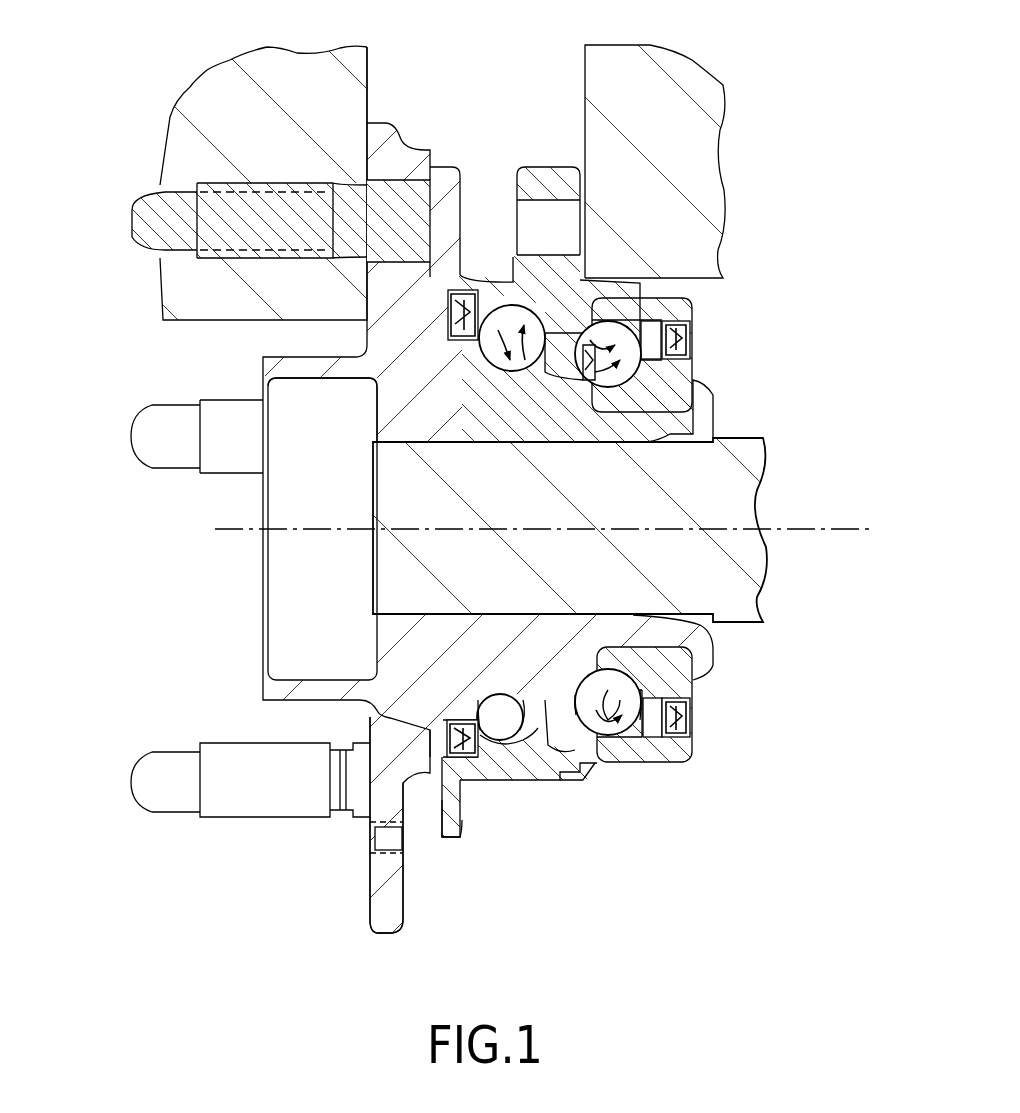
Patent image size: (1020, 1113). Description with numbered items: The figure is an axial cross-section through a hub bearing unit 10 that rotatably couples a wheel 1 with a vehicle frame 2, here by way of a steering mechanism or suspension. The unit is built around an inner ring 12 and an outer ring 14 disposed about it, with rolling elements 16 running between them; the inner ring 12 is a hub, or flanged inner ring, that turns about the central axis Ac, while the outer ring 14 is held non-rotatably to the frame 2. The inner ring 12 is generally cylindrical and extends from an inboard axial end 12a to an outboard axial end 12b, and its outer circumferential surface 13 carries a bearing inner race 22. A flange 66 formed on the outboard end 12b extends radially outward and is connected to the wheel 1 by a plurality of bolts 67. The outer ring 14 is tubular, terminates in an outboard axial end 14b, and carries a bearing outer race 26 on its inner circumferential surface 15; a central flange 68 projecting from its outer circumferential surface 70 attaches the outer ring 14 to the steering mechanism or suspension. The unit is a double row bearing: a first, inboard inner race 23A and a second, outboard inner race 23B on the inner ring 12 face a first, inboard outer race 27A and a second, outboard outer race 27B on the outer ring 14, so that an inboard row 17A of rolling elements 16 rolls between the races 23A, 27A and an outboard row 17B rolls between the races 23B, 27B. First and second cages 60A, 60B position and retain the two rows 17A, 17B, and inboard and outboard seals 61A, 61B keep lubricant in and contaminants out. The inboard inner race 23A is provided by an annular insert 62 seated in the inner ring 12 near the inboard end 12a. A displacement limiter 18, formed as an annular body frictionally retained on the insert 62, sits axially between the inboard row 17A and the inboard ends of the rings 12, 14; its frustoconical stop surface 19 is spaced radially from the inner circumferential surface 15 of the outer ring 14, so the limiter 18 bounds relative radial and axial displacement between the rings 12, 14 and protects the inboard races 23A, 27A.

The wheel 1 is at (203, 75).
The vehicle frame 2 is at (707, 102).
The hub bearing unit 10 is at (130, 357).
The inner ring 12 is at (742, 645).
The inboard axial end 12a is at (713, 670).
The outboard axial end 12b is at (392, 634).
The outer circumferential surface 13 is at (565, 740).
The outer ring 14 is at (705, 790).
The outboard axial end 14b is at (452, 767).
The inner circumferential surface 15 is at (605, 735).
The rolling elements 16 is at (482, 697).
The inboard row of rolling elements 17A is at (620, 690).
The outboard row of rolling elements 17B is at (484, 697).
The displacement limiter 18 is at (672, 288).
The frustoconical stop surface 19 is at (650, 333).
The bearing inner race 22 is at (452, 345).
The inboard inner race 23A is at (652, 705).
The outboard inner race 23B is at (555, 695).
The bearing outer race 26 is at (527, 318).
The inboard outer race 27A is at (587, 347).
The outboard outer race 27B is at (492, 325).
The first cage 60A is at (588, 740).
The second cage 60B is at (515, 738).
The inboard seal 61A is at (698, 722).
The outboard seal 61B is at (432, 730).
The annular insert 62 is at (698, 364).
The flange 66 is at (372, 906).
The bolts 67 is at (148, 207).
The central flange 68 is at (542, 180).
The outer circumferential surface 70 is at (528, 777).
The central axis Ac is at (840, 530).